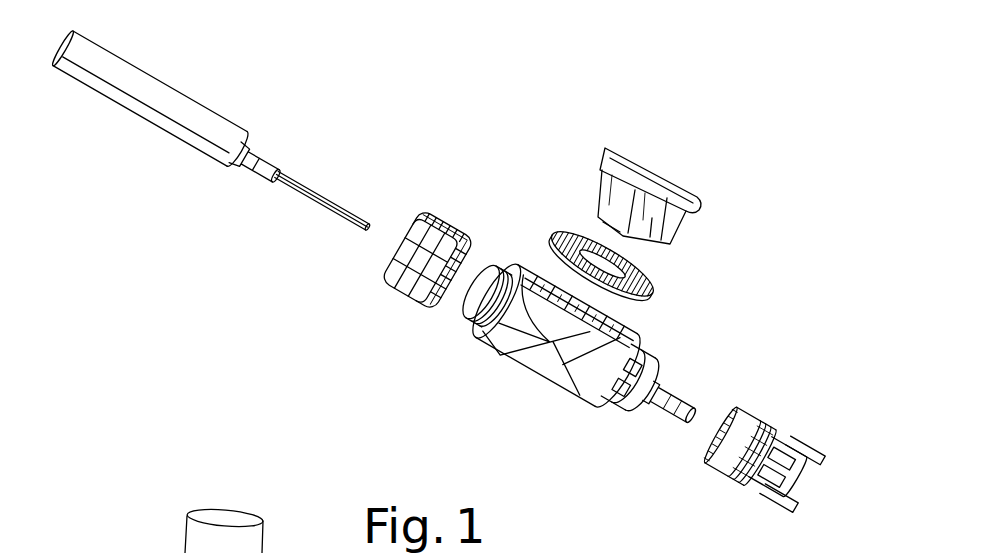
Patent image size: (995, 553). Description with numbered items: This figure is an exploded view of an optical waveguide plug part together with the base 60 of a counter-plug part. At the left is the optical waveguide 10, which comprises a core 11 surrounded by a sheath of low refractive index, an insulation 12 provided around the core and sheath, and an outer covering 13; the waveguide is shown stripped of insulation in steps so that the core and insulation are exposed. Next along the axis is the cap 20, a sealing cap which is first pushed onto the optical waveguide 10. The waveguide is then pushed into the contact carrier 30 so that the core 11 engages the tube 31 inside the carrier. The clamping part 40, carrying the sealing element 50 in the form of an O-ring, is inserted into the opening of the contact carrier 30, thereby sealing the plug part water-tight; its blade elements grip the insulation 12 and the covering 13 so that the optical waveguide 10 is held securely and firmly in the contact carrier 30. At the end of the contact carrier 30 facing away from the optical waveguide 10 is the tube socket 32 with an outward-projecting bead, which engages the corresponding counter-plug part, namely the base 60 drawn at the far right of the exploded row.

The optical waveguide 10 is at (244, 118).
The core 11 is at (327, 210).
The insulation 12 is at (243, 163).
The covering 13 is at (163, 120).
The cap 20 is at (452, 220).
The contact carrier 30 is at (532, 372).
The tube 31 is at (677, 397).
The tube socket 32 is at (610, 417).
The clamping part 40 is at (657, 162).
The sealing element 50 is at (653, 292).
The base 60 is at (745, 435).